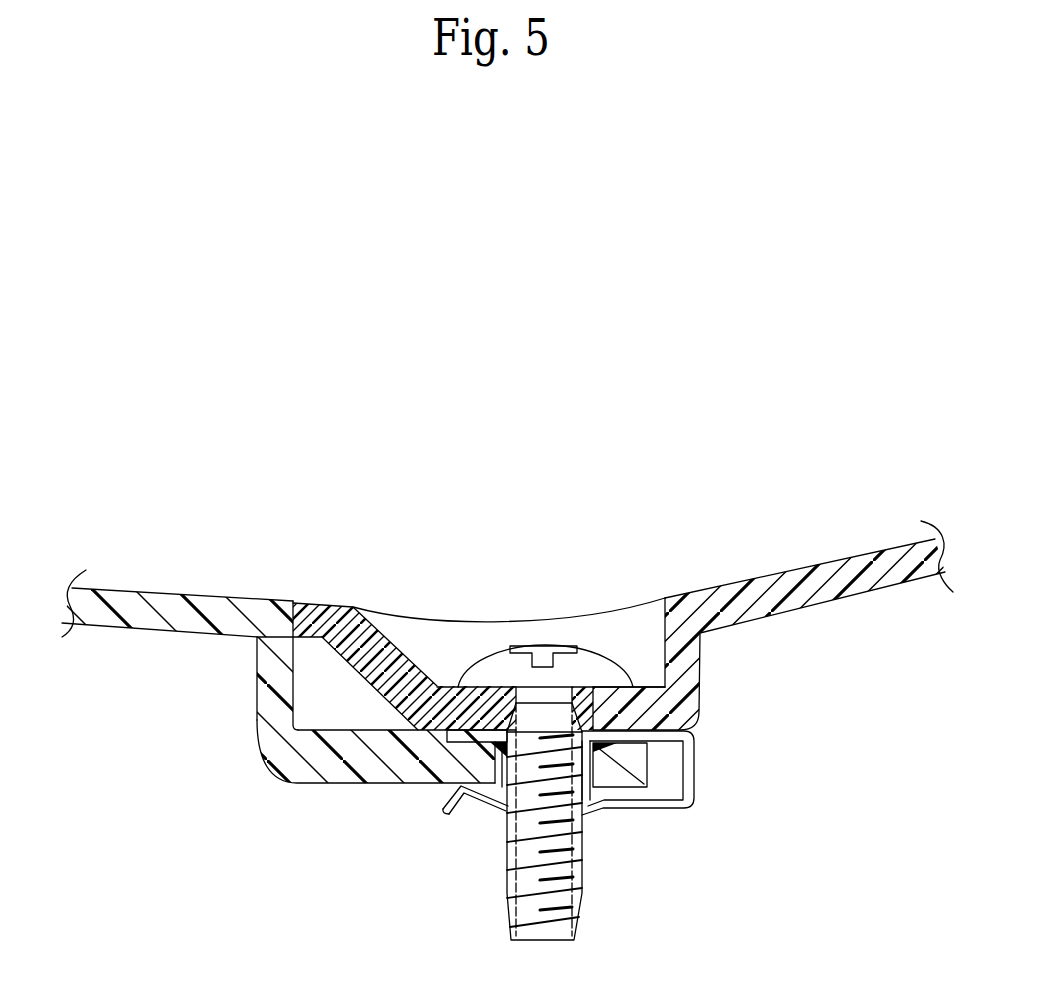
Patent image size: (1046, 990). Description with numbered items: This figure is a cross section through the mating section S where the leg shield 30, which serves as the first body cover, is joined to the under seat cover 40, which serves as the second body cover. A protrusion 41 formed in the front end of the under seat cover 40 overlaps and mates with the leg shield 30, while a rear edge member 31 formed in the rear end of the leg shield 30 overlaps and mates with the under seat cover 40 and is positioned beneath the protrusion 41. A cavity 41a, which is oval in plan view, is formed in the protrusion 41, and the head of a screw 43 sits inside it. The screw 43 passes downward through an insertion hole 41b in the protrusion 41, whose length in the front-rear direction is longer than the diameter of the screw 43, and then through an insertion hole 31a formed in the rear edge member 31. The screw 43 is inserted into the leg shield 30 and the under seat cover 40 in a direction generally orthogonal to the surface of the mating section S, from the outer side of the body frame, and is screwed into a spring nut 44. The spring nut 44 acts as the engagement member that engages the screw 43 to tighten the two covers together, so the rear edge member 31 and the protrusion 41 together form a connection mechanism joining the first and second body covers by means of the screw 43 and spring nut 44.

The mating section S is at (486, 505).
The leg shield 30 is at (150, 592).
The rear edge member 31 is at (337, 770).
The insertion hole 31a is at (493, 812).
The under seat cover 40 is at (830, 556).
The protrusion 41 is at (330, 603).
The cavity 41a is at (433, 637).
The insertion hole 41b is at (493, 700).
The screw 43 is at (597, 660).
The spring nut 44 is at (658, 812).